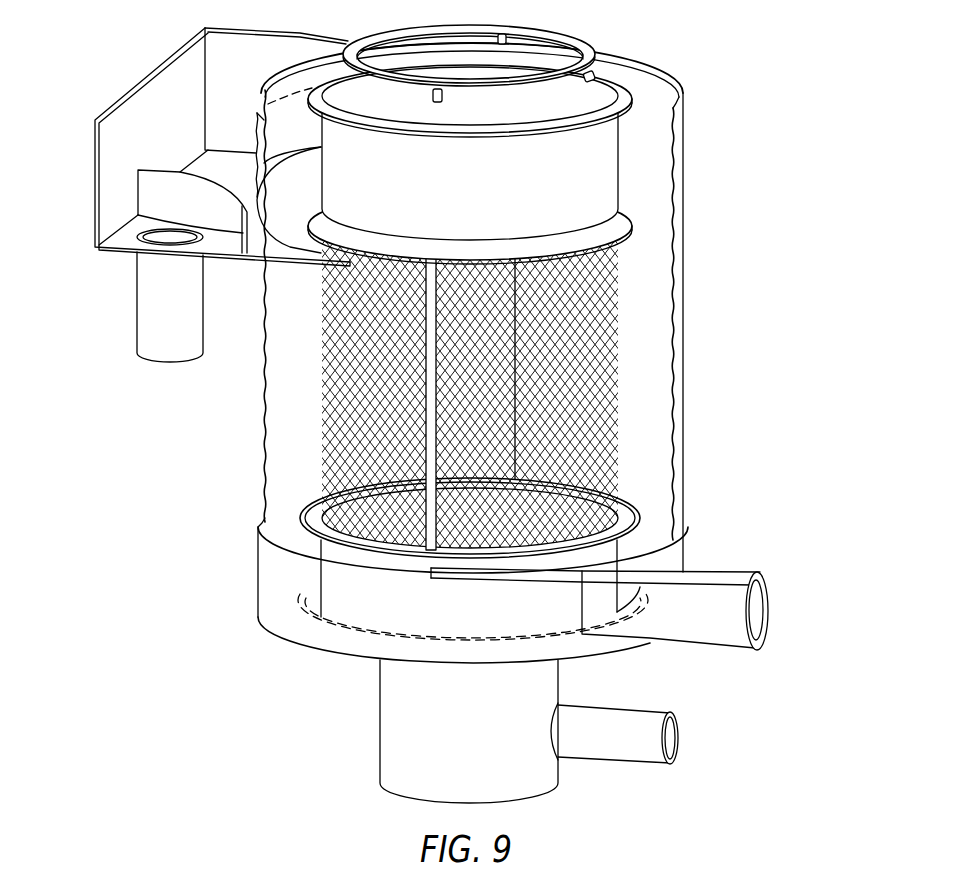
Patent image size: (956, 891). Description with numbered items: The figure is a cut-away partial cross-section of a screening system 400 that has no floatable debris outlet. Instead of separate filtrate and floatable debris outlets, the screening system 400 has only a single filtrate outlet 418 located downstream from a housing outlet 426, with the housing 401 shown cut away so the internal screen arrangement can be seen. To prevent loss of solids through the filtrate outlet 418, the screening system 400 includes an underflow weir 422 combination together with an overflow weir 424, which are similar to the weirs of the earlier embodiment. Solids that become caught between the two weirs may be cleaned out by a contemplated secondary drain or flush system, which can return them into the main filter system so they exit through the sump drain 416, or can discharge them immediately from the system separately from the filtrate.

The screening system 400 is at (415, 403).
The housing 401 is at (683, 400).
The sump drain 416 is at (637, 741).
The filtrate outlet 418 is at (146, 298).
The underflow weir 422 is at (248, 167).
The overflow weir 424 is at (158, 187).
The housing outlet 426 is at (280, 178).